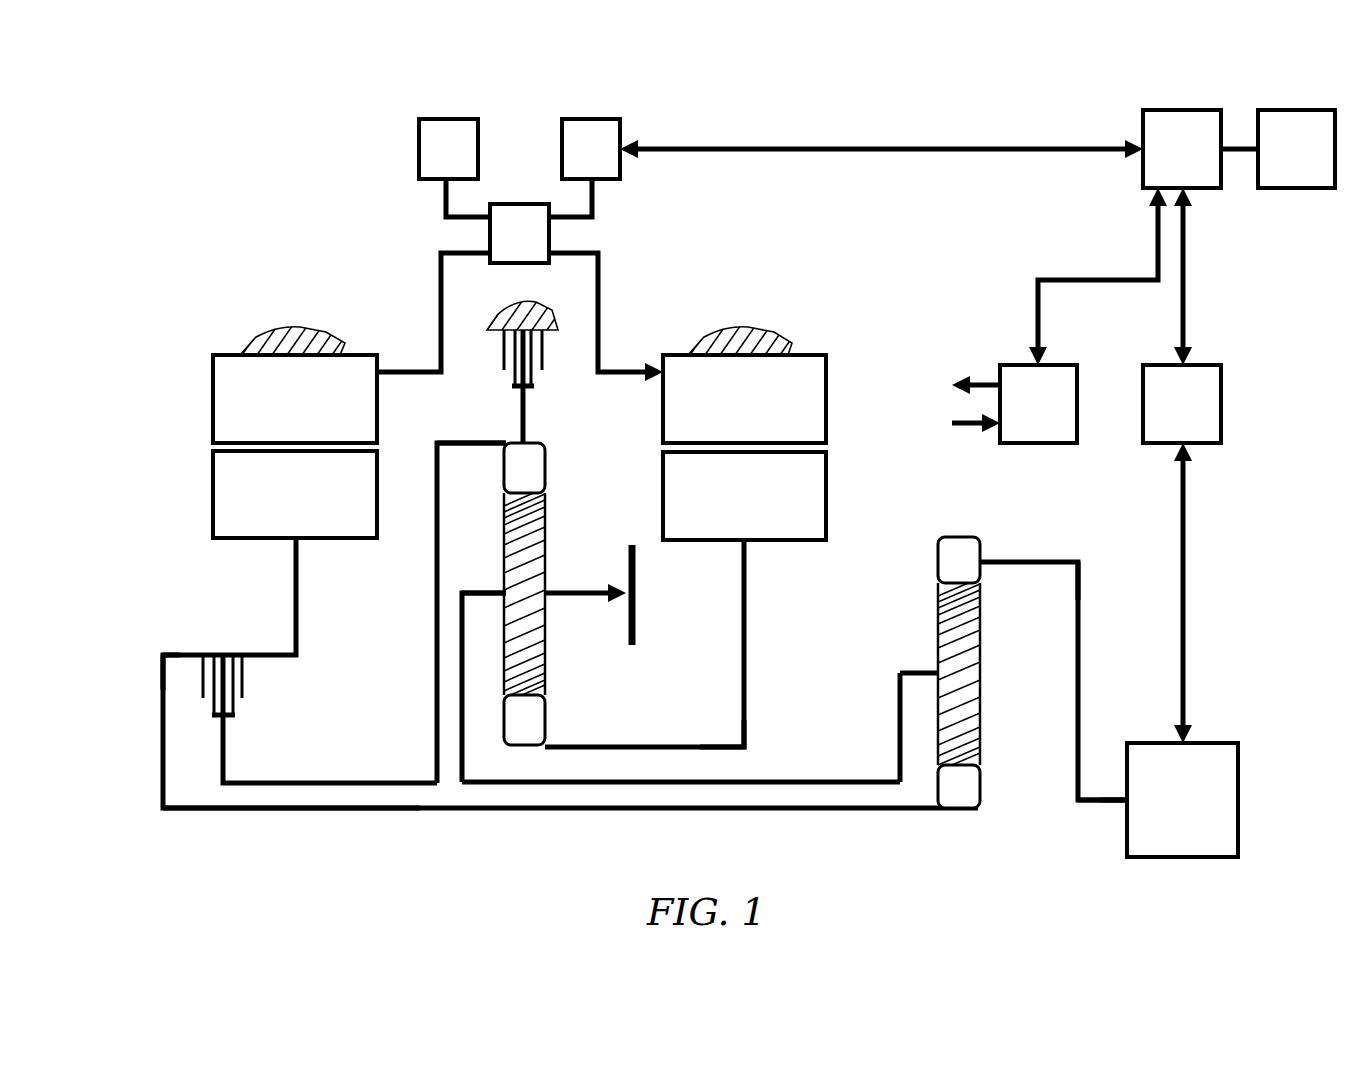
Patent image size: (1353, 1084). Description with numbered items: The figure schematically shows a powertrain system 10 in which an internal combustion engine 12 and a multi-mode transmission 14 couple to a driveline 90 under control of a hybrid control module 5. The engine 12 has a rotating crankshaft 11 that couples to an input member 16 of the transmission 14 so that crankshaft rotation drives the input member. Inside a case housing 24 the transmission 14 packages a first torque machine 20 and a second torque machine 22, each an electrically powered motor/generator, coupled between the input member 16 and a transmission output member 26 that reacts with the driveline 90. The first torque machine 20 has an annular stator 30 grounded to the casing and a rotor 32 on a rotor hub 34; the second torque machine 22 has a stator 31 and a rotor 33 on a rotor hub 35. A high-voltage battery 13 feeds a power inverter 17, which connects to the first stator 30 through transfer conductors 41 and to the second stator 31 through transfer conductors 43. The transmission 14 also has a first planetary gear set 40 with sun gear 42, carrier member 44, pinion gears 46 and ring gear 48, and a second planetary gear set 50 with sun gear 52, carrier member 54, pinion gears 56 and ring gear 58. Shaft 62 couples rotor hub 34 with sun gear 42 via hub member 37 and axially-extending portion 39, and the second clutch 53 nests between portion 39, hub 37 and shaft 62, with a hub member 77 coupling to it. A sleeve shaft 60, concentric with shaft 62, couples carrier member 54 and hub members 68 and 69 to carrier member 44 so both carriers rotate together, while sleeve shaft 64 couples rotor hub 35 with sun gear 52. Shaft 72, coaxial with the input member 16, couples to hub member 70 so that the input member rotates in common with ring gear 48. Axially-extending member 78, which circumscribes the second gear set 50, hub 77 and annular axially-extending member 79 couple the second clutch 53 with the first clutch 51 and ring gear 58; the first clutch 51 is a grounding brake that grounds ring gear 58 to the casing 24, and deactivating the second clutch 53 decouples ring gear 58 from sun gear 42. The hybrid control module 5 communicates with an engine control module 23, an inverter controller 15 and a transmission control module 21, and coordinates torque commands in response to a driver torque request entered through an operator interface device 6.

The hybrid control module 5 is at (1190, 163).
The operator interface device 6 is at (1305, 163).
The powertrain system 10 is at (872, 338).
The crankshaft 11 is at (1108, 804).
The internal combustion engine 12 is at (1196, 814).
The high-voltage battery 13 is at (462, 163).
The multi-mode transmission 14 is at (183, 338).
The inverter controller 15 is at (605, 163).
The input member 16 is at (1080, 820).
The power inverter 17 is at (533, 247).
The first torque machine 20 is at (182, 464).
The transmission control module 21 is at (1052, 418).
The second torque machine 22 is at (843, 440).
The engine control module 23 is at (1195, 418).
The case housing 24 is at (284, 328).
The transmission output member 26 is at (608, 600).
The first stator 30 is at (309, 412).
The second stator 31 is at (759, 412).
The first rotor 32 is at (309, 508).
The second rotor 33 is at (759, 509).
The first rotor hub 34 is at (292, 615).
The second rotor hub 35 is at (748, 600).
The hub member 37 is at (163, 730).
The axially-extending portion 39 is at (178, 655).
The first planetary gear set 40 is at (1000, 647).
The transfer conductors 41 is at (418, 372).
The sun gear 42 is at (983, 795).
The transfer conductors 43 is at (600, 318).
The carrier member 44 is at (908, 673).
The pinion gears 46 is at (983, 630).
The ring gear 48 is at (957, 537).
The second planetary gear set 50 is at (575, 594).
The first clutch 51 is at (596, 410).
The sun gear 52 is at (548, 722).
The second clutch 53 is at (290, 758).
The carrier member 54 is at (478, 593).
The pinion gears 56 is at (549, 537).
The ring gear 58 is at (548, 470).
The sleeve shaft 60 is at (808, 782).
The shaft 62 is at (556, 810).
The sleeve shaft 64 is at (718, 747).
The hub member 68 is at (460, 648).
The hub member 69 is at (900, 720).
The hub member 70 is at (1078, 652).
The shaft 72 is at (1005, 560).
The hub member 77 is at (435, 606).
The axially-extending member 78 is at (485, 443).
The axially-extending member 79 is at (372, 782).
The driveline 90 is at (640, 580).